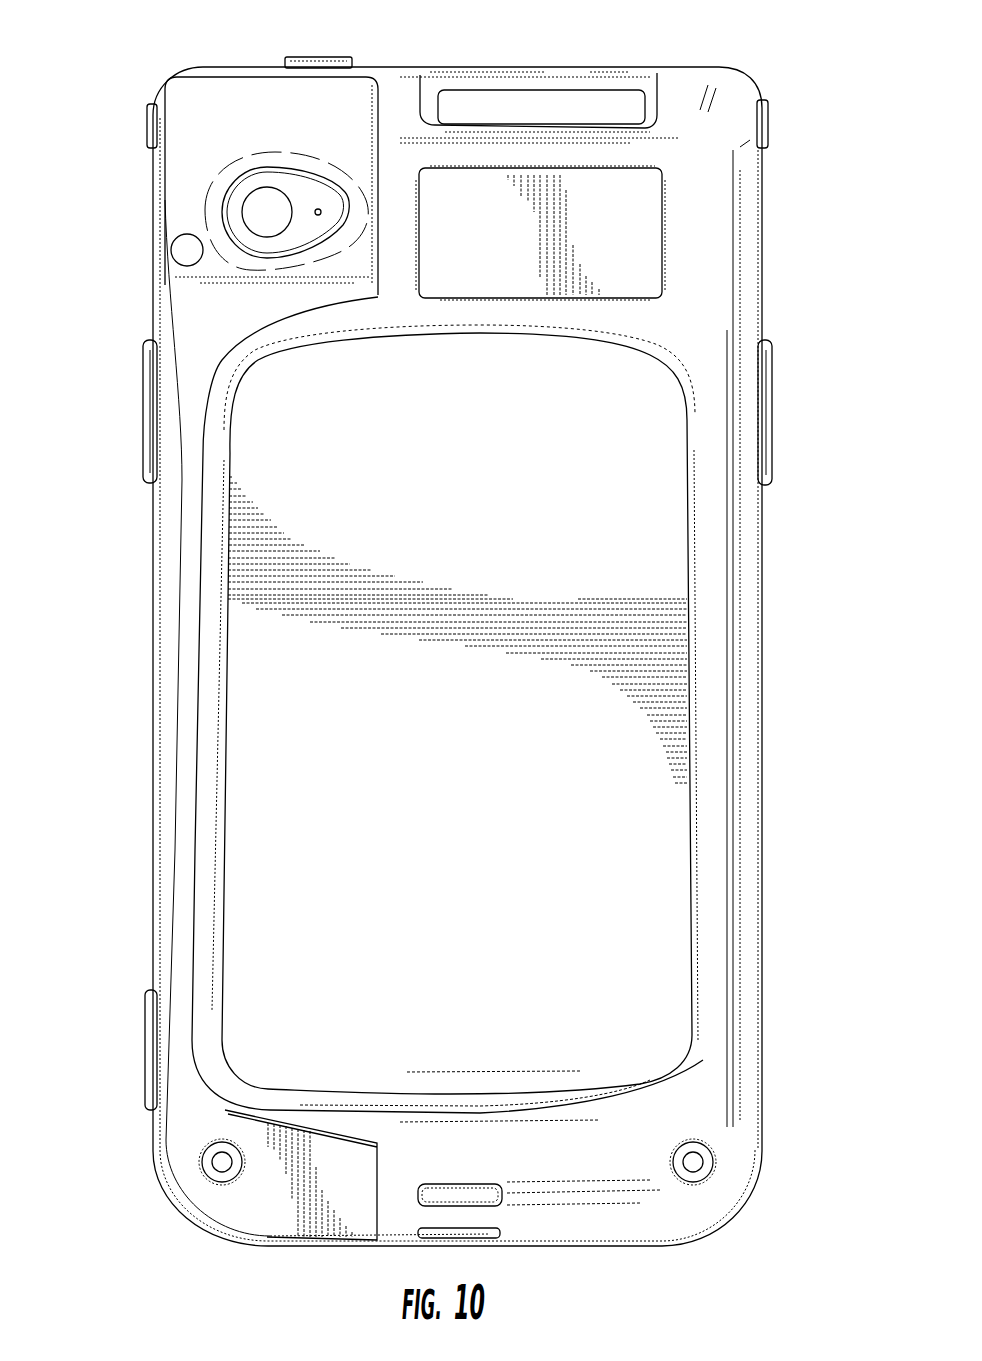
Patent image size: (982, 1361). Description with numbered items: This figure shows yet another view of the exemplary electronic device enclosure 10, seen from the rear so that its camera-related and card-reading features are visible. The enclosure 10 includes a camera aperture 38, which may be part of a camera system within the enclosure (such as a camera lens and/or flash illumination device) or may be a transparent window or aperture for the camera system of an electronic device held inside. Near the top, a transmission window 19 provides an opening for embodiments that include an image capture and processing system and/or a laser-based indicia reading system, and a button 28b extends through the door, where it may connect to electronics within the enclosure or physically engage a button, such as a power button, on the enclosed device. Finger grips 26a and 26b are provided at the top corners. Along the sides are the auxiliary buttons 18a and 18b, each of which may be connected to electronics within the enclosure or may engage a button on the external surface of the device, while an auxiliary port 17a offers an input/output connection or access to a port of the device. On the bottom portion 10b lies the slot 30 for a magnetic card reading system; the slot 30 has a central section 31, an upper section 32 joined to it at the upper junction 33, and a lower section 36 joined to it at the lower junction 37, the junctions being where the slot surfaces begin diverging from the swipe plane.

The enclosure 10 is at (811, 105).
The bottom portion 10b is at (683, 1218).
The auxiliary port 17a is at (147, 1053).
The auxiliary button 18a is at (143, 373).
The auxiliary button 18b is at (760, 423).
The transmission window 19 is at (545, 106).
The finger grip 26a is at (147, 118).
The finger grip 26b is at (766, 121).
The button 28b is at (292, 62).
The slot 30 is at (220, 772).
The central section 31 is at (220, 842).
The upper section 32 is at (258, 408).
The upper junction 33 is at (230, 452).
The lower section 36 is at (237, 1052).
The lower junction 37 is at (220, 1023).
The camera aperture 38 is at (243, 216).